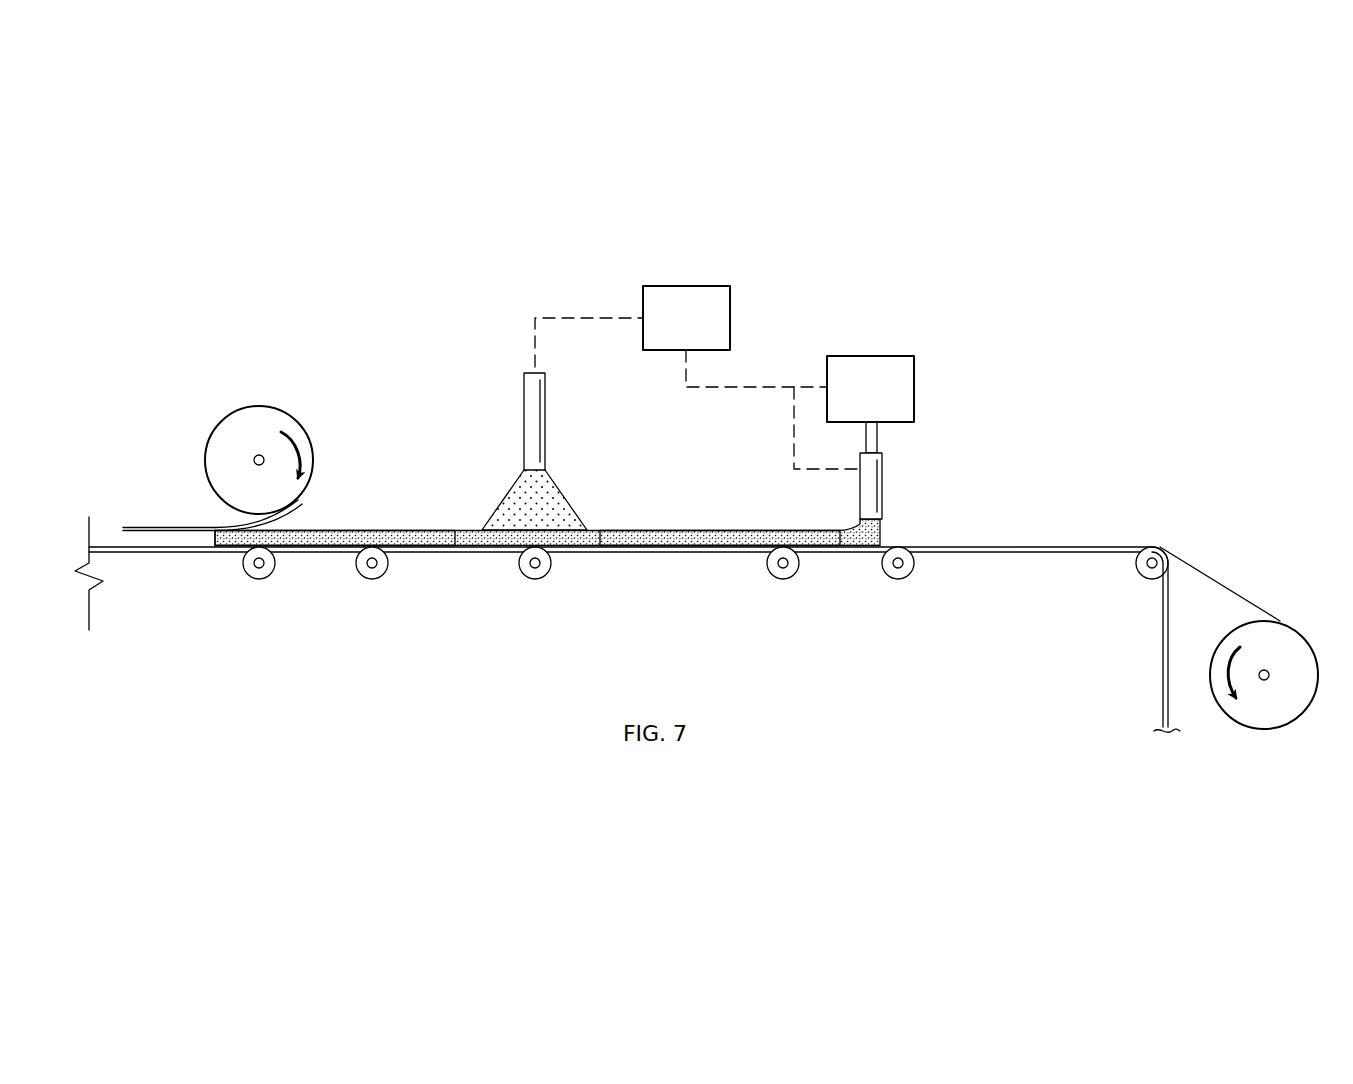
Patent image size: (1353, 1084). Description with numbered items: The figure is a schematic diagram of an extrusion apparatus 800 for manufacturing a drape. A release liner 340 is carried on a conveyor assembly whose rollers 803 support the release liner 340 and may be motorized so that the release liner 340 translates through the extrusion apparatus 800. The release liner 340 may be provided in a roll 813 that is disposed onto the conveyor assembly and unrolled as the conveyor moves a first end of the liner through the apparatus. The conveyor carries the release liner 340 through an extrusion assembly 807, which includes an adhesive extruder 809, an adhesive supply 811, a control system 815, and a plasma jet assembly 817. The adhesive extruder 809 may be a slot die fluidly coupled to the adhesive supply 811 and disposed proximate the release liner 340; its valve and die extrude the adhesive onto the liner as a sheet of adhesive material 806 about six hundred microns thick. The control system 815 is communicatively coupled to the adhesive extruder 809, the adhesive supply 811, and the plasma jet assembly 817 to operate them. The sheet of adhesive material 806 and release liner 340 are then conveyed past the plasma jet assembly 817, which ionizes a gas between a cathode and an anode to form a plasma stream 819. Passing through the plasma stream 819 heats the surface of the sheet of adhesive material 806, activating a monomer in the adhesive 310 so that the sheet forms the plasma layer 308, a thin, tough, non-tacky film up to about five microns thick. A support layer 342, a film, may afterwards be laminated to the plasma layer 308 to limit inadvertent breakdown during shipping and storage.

The extrusion apparatus 800 is at (440, 272).
The rollers 803 is at (258, 580).
The sheet of adhesive material 806 is at (760, 535).
The extrusion assembly 807 is at (819, 388).
The adhesive extruder 809 is at (882, 487).
The adhesive supply 811 is at (870, 404).
The roll 813 is at (1264, 730).
The control system 815 is at (686, 318).
The plasma jet assembly 817 is at (524, 421).
The plasma stream 819 is at (565, 500).
The plasma layer 308 is at (430, 529).
The adhesive 310 is at (352, 540).
The release liner 340 is at (1221, 580).
The support layer 342 is at (142, 526).